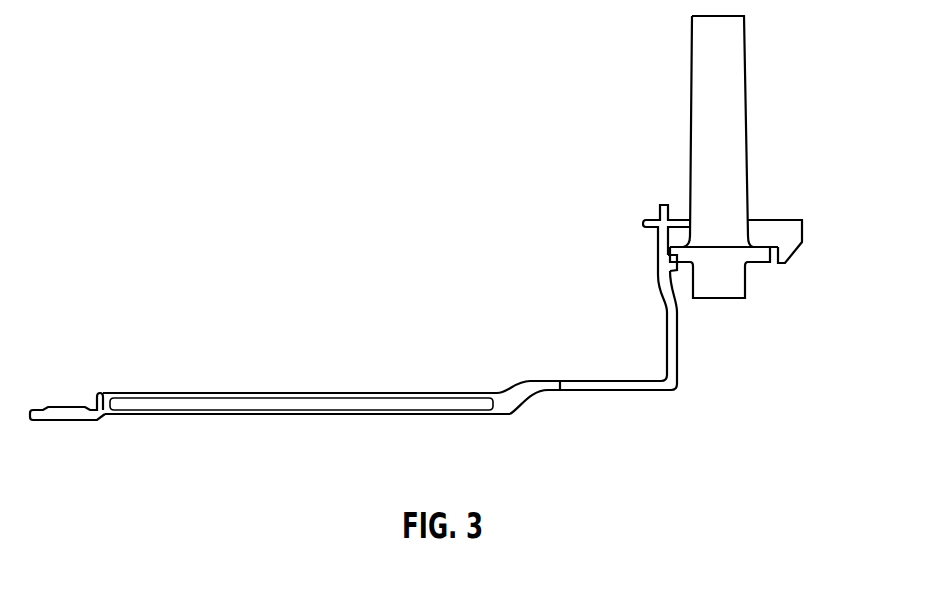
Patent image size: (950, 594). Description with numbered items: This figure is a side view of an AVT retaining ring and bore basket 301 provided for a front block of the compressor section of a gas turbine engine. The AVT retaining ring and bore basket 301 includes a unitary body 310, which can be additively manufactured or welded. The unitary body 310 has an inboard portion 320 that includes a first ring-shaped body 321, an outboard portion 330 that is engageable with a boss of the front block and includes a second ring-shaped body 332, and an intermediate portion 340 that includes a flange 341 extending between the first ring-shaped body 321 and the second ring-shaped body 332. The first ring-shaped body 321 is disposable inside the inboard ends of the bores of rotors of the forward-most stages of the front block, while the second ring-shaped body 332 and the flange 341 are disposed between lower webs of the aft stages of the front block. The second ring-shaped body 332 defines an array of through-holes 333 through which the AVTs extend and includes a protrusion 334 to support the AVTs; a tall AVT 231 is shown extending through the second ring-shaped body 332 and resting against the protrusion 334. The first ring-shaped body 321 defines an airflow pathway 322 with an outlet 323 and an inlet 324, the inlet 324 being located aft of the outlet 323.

The terminal pin 231 is at (690, 37).
The through-holes 333 is at (727, 223).
The outboard portion 330 is at (792, 233).
The second ring-shaped body 332 is at (650, 234).
The protrusion 334 is at (663, 265).
The intermediate portion 340 is at (668, 310).
The flange 341 is at (679, 357).
The AVT retaining ring and bore basket 301 is at (225, 343).
The unitary body 310 is at (97, 392).
The inboard portion 320 is at (320, 392).
The first ring-shaped body 321 is at (502, 400).
The airflow pathway 322 is at (158, 405).
The outlet 323 is at (125, 396).
The inlet 324 is at (455, 403).